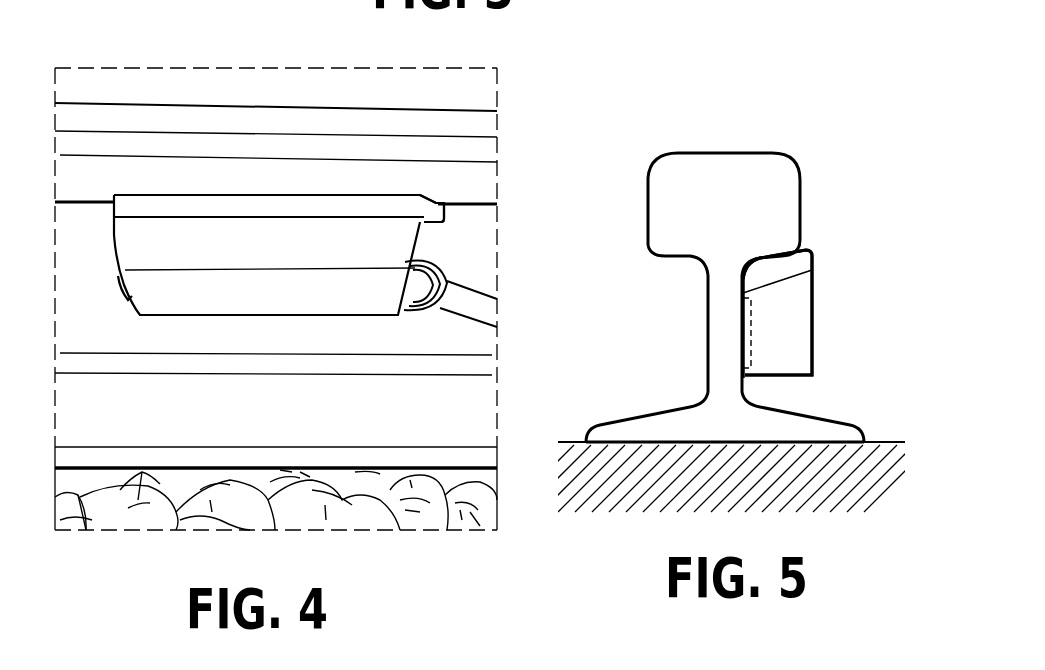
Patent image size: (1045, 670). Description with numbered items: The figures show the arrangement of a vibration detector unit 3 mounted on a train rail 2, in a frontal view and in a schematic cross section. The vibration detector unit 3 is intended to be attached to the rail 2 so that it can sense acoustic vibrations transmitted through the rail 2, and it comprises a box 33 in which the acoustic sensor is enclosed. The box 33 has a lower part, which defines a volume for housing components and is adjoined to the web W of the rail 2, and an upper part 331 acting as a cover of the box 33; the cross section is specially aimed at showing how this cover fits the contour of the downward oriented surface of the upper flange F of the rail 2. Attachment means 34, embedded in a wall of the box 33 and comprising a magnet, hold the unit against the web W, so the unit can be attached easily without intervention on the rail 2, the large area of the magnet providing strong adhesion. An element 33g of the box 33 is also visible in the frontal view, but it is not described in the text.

In FIG. 4, the train rail 2 is at (222, 125).
In FIG. 4, the vibration detector unit 3 is at (244, 322).
In FIG. 5, the vibration detector unit 3 is at (822, 357).
In FIG. 4, the housing flange of sensor device 33g is at (440, 205).
In FIG. 5, the box 33 is at (768, 296).
In FIG. 5, the upper part 331 is at (792, 262).
In FIG. 5, the attachment means 34 is at (738, 333).
In FIG. 5, the upper flange F is at (739, 187).
In FIG. 5, the web W is at (725, 300).